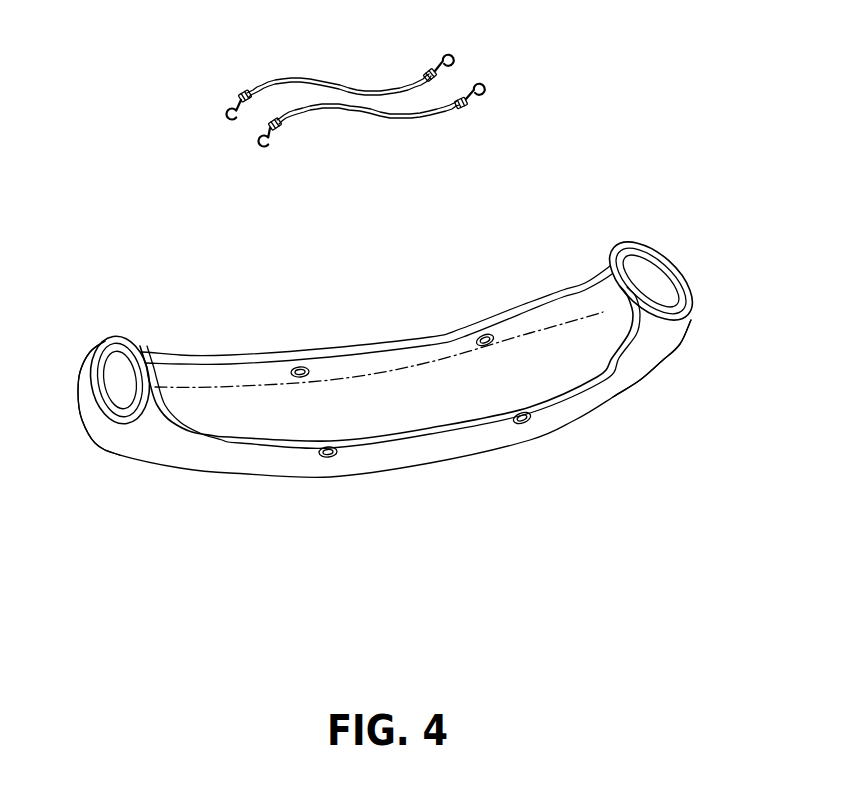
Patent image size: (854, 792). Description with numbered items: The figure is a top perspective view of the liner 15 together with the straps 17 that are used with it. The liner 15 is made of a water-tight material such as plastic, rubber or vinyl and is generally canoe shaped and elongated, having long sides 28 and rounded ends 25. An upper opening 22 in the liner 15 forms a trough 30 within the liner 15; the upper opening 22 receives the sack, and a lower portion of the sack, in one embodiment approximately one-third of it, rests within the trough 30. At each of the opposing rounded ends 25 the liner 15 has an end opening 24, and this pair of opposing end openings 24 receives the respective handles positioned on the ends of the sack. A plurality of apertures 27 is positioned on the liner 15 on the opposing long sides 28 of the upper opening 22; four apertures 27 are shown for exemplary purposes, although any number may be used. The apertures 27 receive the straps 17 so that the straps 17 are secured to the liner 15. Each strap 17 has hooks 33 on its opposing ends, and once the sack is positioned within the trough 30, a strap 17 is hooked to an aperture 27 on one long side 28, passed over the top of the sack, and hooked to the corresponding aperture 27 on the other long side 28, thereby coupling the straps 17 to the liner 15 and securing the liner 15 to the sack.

The liner 15 is at (547, 230).
The straps 17 is at (320, 82).
The upper opening 22 is at (220, 364).
The end openings 24 is at (120, 377).
The rounded ends 25 is at (92, 422).
The apertures 27 is at (291, 369).
The long sides 28 is at (458, 327).
The trough 30 is at (412, 393).
The hooks 33 is at (447, 53).